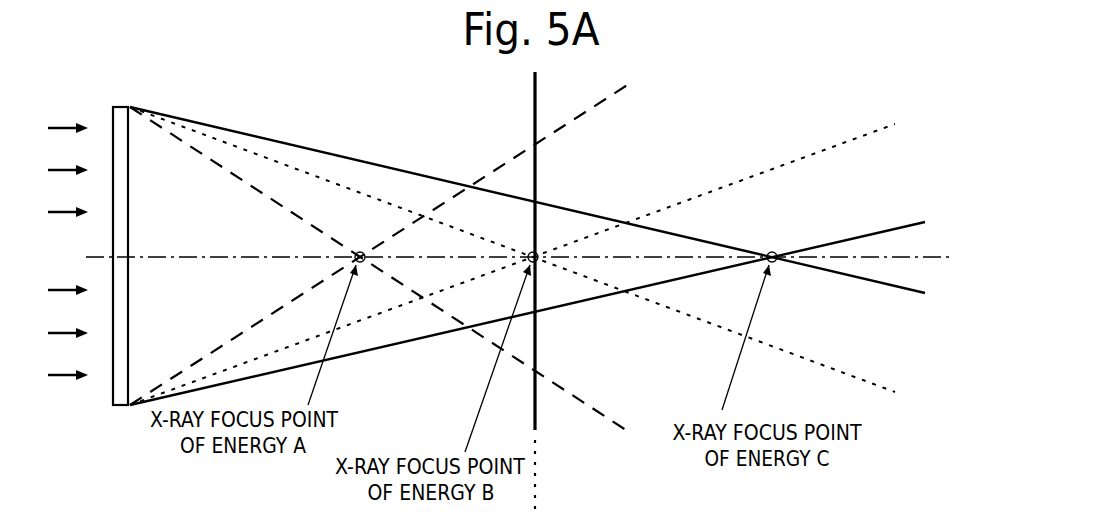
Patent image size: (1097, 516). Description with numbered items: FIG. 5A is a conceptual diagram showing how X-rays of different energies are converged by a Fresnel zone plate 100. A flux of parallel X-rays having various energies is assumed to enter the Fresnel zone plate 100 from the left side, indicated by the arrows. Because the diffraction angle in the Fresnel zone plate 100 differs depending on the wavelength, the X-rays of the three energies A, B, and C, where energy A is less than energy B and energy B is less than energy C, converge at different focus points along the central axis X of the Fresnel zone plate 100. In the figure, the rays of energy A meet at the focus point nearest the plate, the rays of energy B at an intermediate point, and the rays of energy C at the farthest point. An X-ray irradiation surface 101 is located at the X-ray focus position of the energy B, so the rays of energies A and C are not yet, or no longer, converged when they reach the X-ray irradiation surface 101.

The Fresnel zone plate 100 is at (113, 125).
The X-ray irradiation surface 101 is at (533, 95).
The energy A is at (396, 254).
The energy B is at (528, 256).
The energy C is at (543, 256).
The central axis X is at (506, 250).